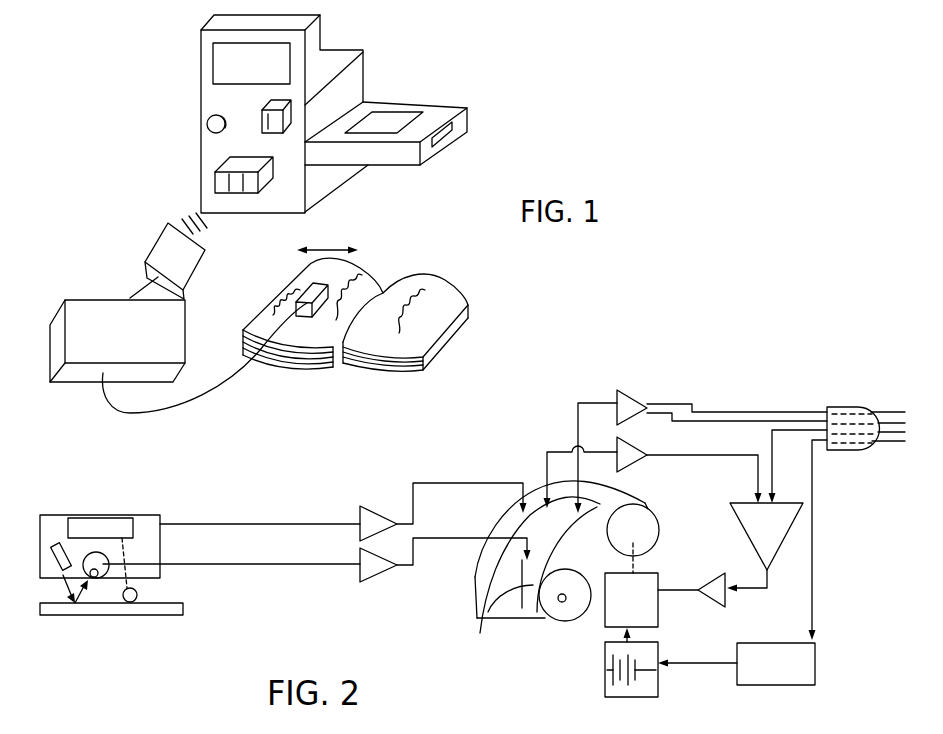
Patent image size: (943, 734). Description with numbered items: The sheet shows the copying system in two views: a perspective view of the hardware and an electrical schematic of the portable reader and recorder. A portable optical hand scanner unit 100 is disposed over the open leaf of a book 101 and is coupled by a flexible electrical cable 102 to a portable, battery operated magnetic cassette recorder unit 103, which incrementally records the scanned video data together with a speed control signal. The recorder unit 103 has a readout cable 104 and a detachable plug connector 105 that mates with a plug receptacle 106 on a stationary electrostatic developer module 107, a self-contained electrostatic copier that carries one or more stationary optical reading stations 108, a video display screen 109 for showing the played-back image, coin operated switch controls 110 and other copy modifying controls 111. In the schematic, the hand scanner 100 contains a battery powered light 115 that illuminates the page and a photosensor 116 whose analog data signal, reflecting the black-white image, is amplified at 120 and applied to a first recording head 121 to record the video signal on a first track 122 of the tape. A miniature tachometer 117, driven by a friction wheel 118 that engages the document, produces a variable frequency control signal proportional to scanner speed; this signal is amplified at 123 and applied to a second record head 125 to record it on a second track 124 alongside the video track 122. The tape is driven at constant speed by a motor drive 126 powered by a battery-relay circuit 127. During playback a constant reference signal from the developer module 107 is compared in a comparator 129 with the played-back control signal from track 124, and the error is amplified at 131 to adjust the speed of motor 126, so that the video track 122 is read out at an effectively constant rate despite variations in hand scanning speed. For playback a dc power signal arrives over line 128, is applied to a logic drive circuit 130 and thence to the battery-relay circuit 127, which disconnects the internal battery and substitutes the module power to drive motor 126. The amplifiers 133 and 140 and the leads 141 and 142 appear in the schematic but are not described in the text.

In FIG. 1, the portable optical hand scanner unit 100 is at (317, 307).
In FIG. 2, the portable optical hand scanner unit 100 is at (112, 507).
In FIG. 1, the book 101 is at (447, 303).
In FIG. 2, the book 101 is at (180, 610).
In FIG. 1, the flexible electrical cable 102 is at (227, 383).
In FIG. 1, the magnetic cassette recorder unit 103 is at (97, 313).
In FIG. 1, the readout cable 104 is at (177, 293).
In FIG. 1, the detachable plug connector 105 is at (173, 243).
In FIG. 2, the detachable plug connector 105 is at (880, 380).
In FIG. 1, the plug receptacle 106 is at (215, 177).
In FIG. 1, the stationary electrostatic developer module 107 is at (190, 73).
In FIG. 1, the stationary optical reading station 108 is at (432, 118).
In FIG. 1, the video display screen 109 is at (268, 62).
In FIG. 1, the coin operated switch controls 110 is at (284, 117).
In FIG. 1, the copy modifying controls 111 is at (207, 124).
In FIG. 2, the battery powered light 115 is at (40, 578).
In FIG. 2, the photosensor 116 is at (90, 582).
In FIG. 2, the miniature tachometer 117 is at (68, 528).
In FIG. 2, the friction wheel 118 is at (140, 595).
In FIG. 2, the amplifier 120 is at (367, 573).
In FIG. 2, the first recording head 121 is at (554, 582).
In FIG. 2, the first track 122 is at (480, 633).
In FIG. 2, the amplifier 123 is at (360, 512).
In FIG. 2, the second track 124 is at (490, 532).
In FIG. 2, the second record head 125 is at (518, 513).
In FIG. 2, the motor drive 126 is at (660, 620).
In FIG. 2, the battery-relay circuit 127 is at (605, 648).
In FIG. 2, the line 128 is at (813, 470).
In FIG. 2, the comparator 129 is at (773, 540).
In FIG. 2, the logic drive circuit 130 is at (800, 686).
In FIG. 2, the amplifier 131 is at (728, 607).
In FIG. 2, the amplifier 133 is at (623, 458).
In FIG. 2, the amplifier 140 is at (617, 403).
In FIG. 2, the lead 141 is at (790, 412).
In FIG. 2, the lead 142 is at (708, 420).